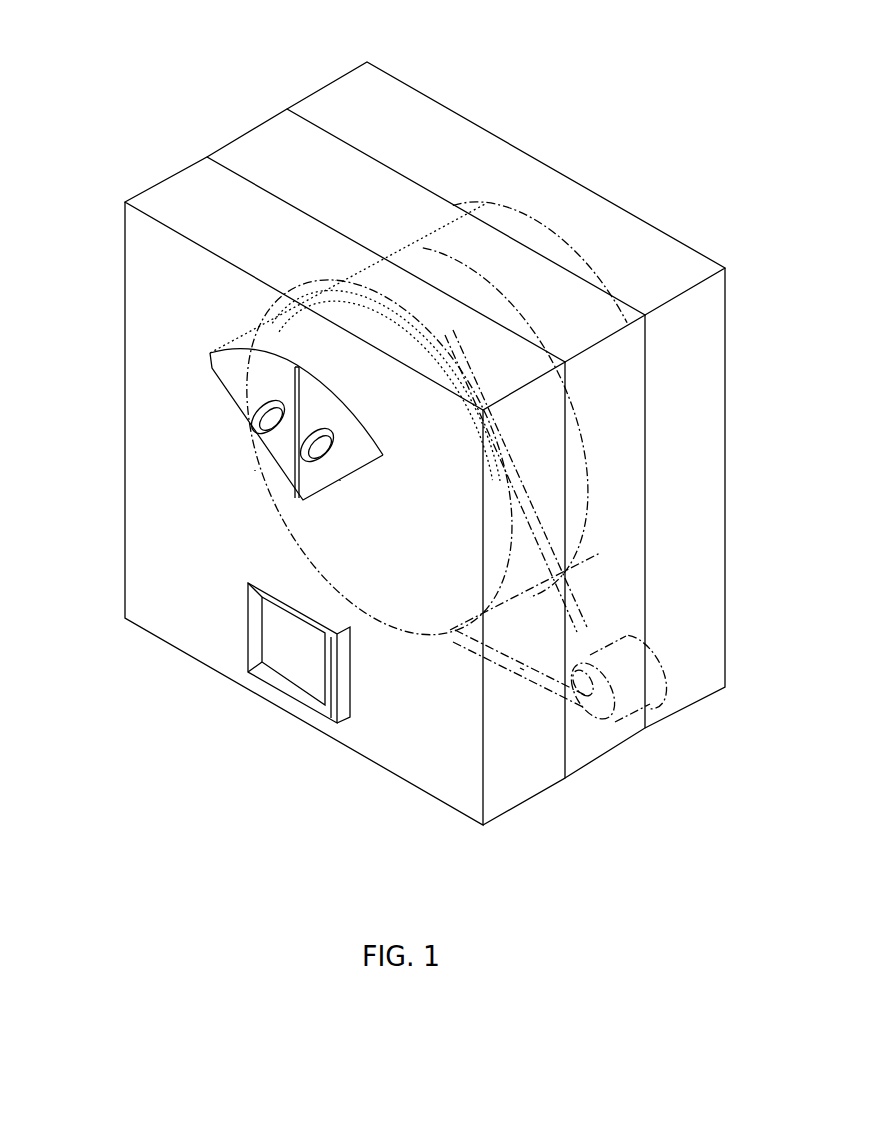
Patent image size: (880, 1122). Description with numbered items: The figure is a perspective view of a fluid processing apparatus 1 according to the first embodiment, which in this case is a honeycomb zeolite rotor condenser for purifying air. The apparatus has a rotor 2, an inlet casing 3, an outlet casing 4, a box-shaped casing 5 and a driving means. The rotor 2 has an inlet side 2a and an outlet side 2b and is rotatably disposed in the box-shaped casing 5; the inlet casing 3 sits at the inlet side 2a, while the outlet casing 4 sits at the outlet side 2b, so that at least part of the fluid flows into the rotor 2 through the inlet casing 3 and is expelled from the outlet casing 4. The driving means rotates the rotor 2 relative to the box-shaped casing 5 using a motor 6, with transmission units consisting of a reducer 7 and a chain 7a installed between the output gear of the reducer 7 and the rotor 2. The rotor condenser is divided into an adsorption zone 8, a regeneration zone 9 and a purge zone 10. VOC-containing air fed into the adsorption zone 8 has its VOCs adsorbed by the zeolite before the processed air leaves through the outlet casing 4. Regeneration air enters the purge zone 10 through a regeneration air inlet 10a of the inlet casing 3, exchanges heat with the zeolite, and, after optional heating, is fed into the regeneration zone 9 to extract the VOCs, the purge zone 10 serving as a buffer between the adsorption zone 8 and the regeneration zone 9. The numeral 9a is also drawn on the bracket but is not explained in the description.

The fluid processing apparatus 1 is at (572, 109).
The rotor 2 is at (462, 345).
The inlet side 2a is at (267, 295).
The outlet side 2b is at (440, 252).
The inlet casing 3 is at (163, 180).
The outlet casing 4 is at (317, 90).
The box-shaped casing 5 is at (253, 128).
The motor 6 is at (630, 697).
The reducer 7 is at (583, 712).
The chain 7a is at (523, 668).
The adsorption zone 8 is at (274, 535).
The regeneration zone 9 is at (267, 355).
The hole 9a is at (256, 421).
The purge zone 10 is at (362, 503).
The regeneration air inlet 10a is at (308, 452).